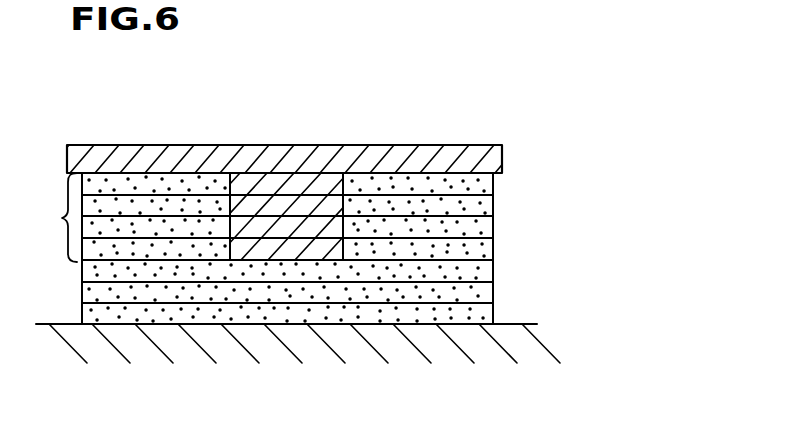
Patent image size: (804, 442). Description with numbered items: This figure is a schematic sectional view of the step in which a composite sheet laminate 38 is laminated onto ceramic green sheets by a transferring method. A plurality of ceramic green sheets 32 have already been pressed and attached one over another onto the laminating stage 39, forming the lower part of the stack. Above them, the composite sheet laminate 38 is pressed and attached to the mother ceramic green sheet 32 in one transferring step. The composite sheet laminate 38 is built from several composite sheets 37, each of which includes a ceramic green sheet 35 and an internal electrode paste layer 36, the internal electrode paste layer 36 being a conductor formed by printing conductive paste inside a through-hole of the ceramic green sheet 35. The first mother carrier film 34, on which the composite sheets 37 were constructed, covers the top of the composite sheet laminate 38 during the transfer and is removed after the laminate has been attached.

The ceramic green sheet 32 is at (482, 273).
The first mother carrier film 34 is at (98, 144).
The ceramic green sheet 35 is at (119, 203).
The internal electrode paste layer 36 is at (282, 190).
The composite sheet 37 is at (493, 208).
The composite sheet laminate 38 is at (47, 217).
The laminating stage 39 is at (519, 324).